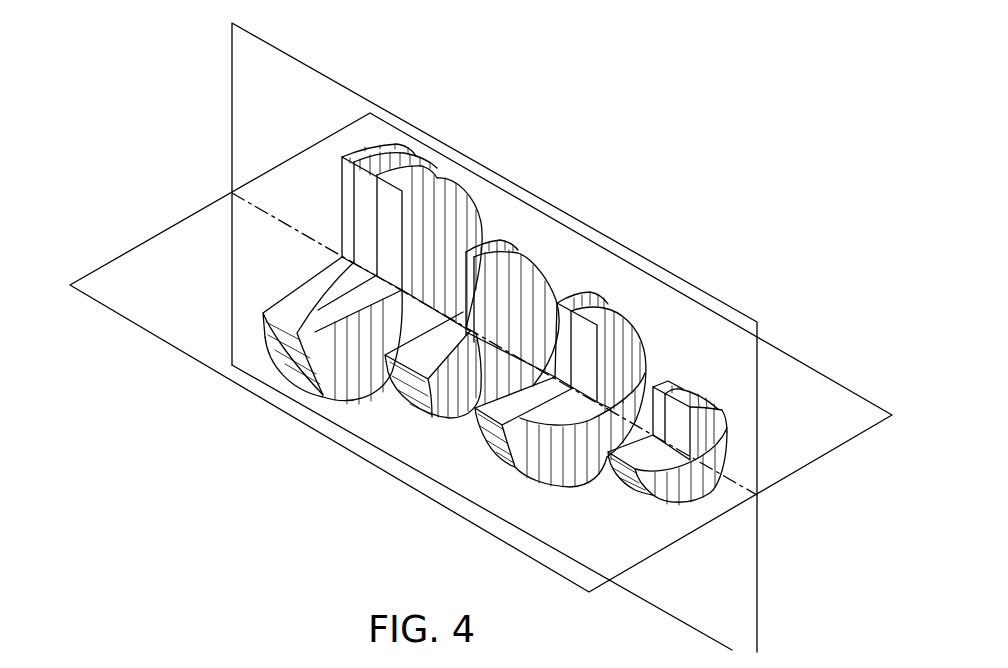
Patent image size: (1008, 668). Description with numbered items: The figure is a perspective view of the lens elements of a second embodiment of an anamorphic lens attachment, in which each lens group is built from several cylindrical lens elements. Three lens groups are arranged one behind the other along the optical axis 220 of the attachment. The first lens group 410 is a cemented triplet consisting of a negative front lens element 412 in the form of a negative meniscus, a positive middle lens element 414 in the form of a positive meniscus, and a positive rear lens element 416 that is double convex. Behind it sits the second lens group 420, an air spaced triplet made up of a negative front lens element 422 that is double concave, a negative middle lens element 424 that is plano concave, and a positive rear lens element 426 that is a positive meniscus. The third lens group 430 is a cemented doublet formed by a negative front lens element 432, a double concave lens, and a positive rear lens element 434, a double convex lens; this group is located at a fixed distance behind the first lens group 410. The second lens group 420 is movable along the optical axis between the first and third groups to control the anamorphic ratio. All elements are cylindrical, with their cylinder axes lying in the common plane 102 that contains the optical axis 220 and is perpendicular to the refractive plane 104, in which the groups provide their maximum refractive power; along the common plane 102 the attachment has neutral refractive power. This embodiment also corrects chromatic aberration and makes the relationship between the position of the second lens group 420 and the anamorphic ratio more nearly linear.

The common plane 102 is at (699, 617).
The refractive plane 104 is at (835, 388).
The optical axis 220 is at (758, 495).
The first lens group 410 is at (490, 164).
The negative front lens element 412 is at (258, 338).
The positive middle lens element 414 is at (296, 358).
The positive rear lens element 416 is at (318, 340).
The second lens group 420 is at (647, 310).
The negative front lens element 422 is at (388, 360).
The negative middle lens element 424 is at (475, 410).
The positive rear lens element 426 is at (492, 447).
The third lens group 430 is at (722, 410).
The negative front lens element 432 is at (612, 470).
The positive rear lens element 434 is at (645, 487).